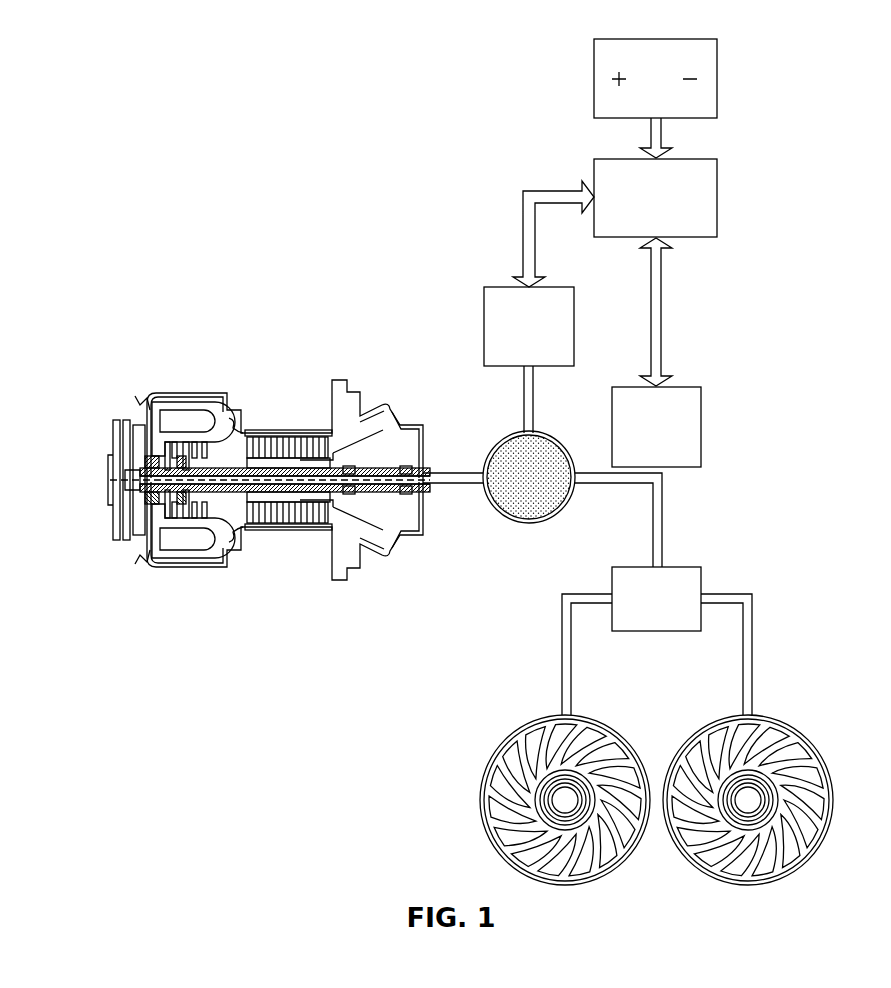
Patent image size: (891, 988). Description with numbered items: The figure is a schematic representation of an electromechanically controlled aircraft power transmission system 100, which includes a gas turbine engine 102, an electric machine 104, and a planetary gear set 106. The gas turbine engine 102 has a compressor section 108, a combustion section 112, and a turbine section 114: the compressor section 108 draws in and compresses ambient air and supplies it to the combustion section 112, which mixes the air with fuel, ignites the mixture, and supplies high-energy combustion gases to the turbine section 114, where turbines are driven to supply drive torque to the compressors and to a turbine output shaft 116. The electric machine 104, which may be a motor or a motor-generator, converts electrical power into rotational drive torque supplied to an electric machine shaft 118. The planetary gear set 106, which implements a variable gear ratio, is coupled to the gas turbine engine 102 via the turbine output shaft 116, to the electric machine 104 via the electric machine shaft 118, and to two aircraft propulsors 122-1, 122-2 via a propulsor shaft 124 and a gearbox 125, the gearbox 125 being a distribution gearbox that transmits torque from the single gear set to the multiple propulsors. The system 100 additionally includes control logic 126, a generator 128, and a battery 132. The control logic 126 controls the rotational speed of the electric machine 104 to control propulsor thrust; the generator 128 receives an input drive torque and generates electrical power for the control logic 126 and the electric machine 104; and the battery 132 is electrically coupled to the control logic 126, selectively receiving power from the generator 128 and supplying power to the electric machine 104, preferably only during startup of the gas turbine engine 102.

The electromechanically controlled aircraft power transmission system 100 is at (166, 102).
The gas turbine engine 102 is at (269, 480).
The electric machine 104 is at (555, 287).
The planetary gear set 106 is at (528, 522).
The compressor section 108 is at (276, 545).
The combustion section 112 is at (179, 577).
The turbine section 114 is at (157, 432).
The turbine output shaft 116 is at (455, 470).
The electric machine shaft 118 is at (523, 398).
The aircraft propulsor 122-1 is at (729, 713).
The aircraft propulsor 122-2 is at (547, 713).
The propulsor shaft 124 is at (665, 525).
The gearbox 125 is at (680, 567).
The control logic 126 is at (680, 159).
The generator 128 is at (682, 387).
The battery 132 is at (655, 38).